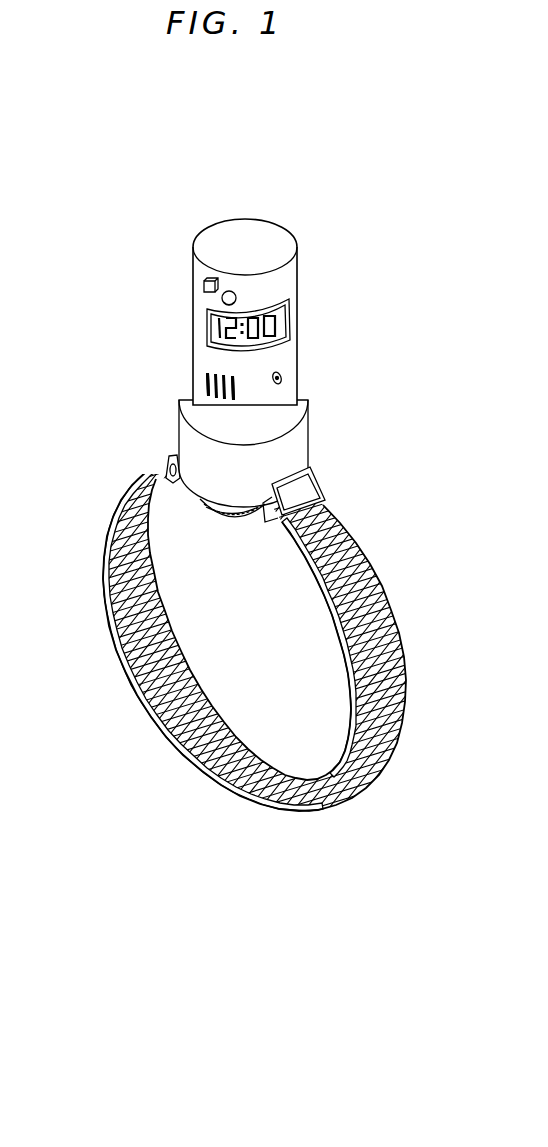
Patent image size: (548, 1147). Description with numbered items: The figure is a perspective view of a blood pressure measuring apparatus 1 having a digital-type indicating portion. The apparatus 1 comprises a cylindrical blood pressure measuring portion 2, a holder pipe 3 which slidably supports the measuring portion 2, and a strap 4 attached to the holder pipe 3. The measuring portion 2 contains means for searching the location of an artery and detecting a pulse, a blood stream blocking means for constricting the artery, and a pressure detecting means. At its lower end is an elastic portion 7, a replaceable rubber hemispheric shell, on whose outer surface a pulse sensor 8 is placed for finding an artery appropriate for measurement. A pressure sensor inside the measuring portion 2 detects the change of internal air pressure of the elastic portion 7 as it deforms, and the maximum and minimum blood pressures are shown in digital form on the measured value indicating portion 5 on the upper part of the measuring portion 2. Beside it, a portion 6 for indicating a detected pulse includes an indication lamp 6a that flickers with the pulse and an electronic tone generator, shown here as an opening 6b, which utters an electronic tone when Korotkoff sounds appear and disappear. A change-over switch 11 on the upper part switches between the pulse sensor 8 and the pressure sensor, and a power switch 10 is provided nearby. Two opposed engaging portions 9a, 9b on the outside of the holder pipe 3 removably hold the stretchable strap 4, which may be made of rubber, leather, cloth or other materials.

The blood pressure measuring apparatus 1 is at (343, 295).
The blood pressure measuring portion 2 is at (288, 352).
The holder pipe 3 is at (300, 448).
The strap 4 is at (398, 625).
The portion for indicating a measured value of blood pressure 5 is at (205, 322).
The portion for indicating a detected pulse 6 is at (240, 394).
The indication lamp 6a is at (203, 383).
The hole 6b is at (283, 378).
The elastic portion 7 is at (222, 524).
The pulse sensor 8 is at (241, 528).
The engaging portion 9a is at (325, 503).
The engaging portion 9b is at (172, 438).
The power switch 10 is at (203, 285).
The change-over switch 11 is at (221, 298).